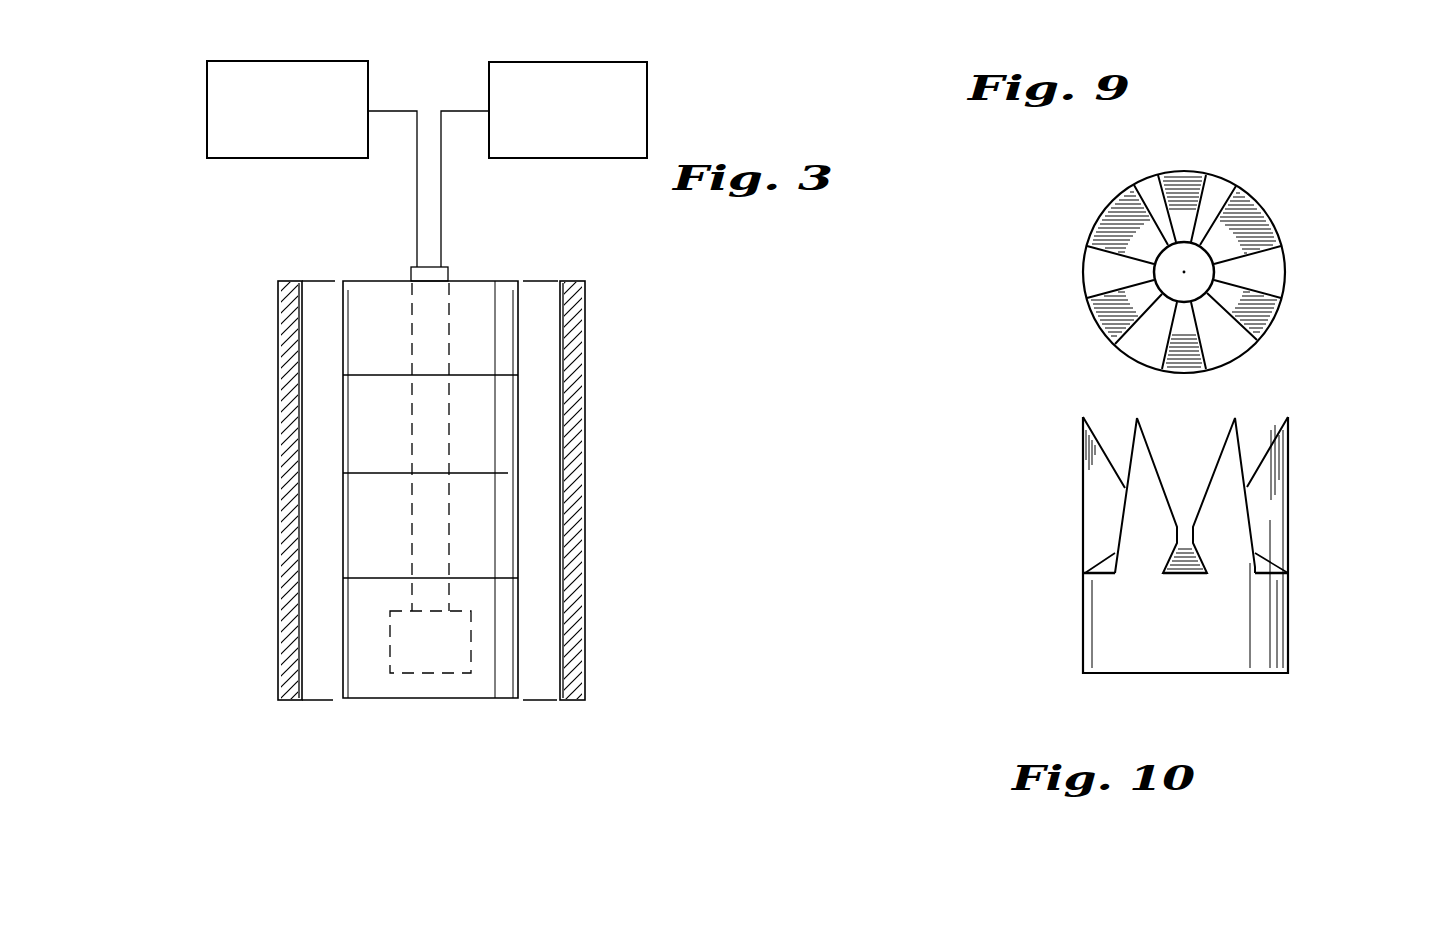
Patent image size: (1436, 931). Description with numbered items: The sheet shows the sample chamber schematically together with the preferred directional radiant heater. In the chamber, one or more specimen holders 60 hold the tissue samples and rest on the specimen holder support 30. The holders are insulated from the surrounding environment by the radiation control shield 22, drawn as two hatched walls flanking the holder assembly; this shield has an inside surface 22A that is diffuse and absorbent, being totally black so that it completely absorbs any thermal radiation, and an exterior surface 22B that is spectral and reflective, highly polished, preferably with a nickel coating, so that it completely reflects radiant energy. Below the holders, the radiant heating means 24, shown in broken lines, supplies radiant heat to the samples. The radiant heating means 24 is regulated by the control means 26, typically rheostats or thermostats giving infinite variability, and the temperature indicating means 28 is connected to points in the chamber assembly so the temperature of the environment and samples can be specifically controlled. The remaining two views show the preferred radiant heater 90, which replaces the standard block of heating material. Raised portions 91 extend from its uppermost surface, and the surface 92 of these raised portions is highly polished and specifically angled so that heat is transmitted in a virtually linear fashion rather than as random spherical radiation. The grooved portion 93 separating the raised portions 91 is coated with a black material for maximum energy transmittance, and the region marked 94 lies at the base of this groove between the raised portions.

In FIG. 3, the radiation control shield 22 is at (559, 477).
In FIG. 3, the inside surface 22A is at (556, 446).
In FIG. 3, the exterior surface 22B is at (585, 580).
In FIG. 3, the radiant heating means 24 is at (407, 671).
In FIG. 3, the control means 26 is at (640, 77).
In FIG. 3, the temperature indicating means 28 is at (295, 150).
In FIG. 3, the specimen holder support 30 is at (505, 693).
In FIG. 3, the specimen holder 60 is at (367, 503).
In FIG. 9, the radiant heater 90 is at (1282, 222).
In FIG. 9, the raised portions 91 is at (1247, 190).
In FIG. 9, the surface of raised portions 92 is at (1273, 275).
In FIG. 10, the grooved portion 93 is at (1167, 525).
In FIG. 10, the trough 94 is at (1183, 560).